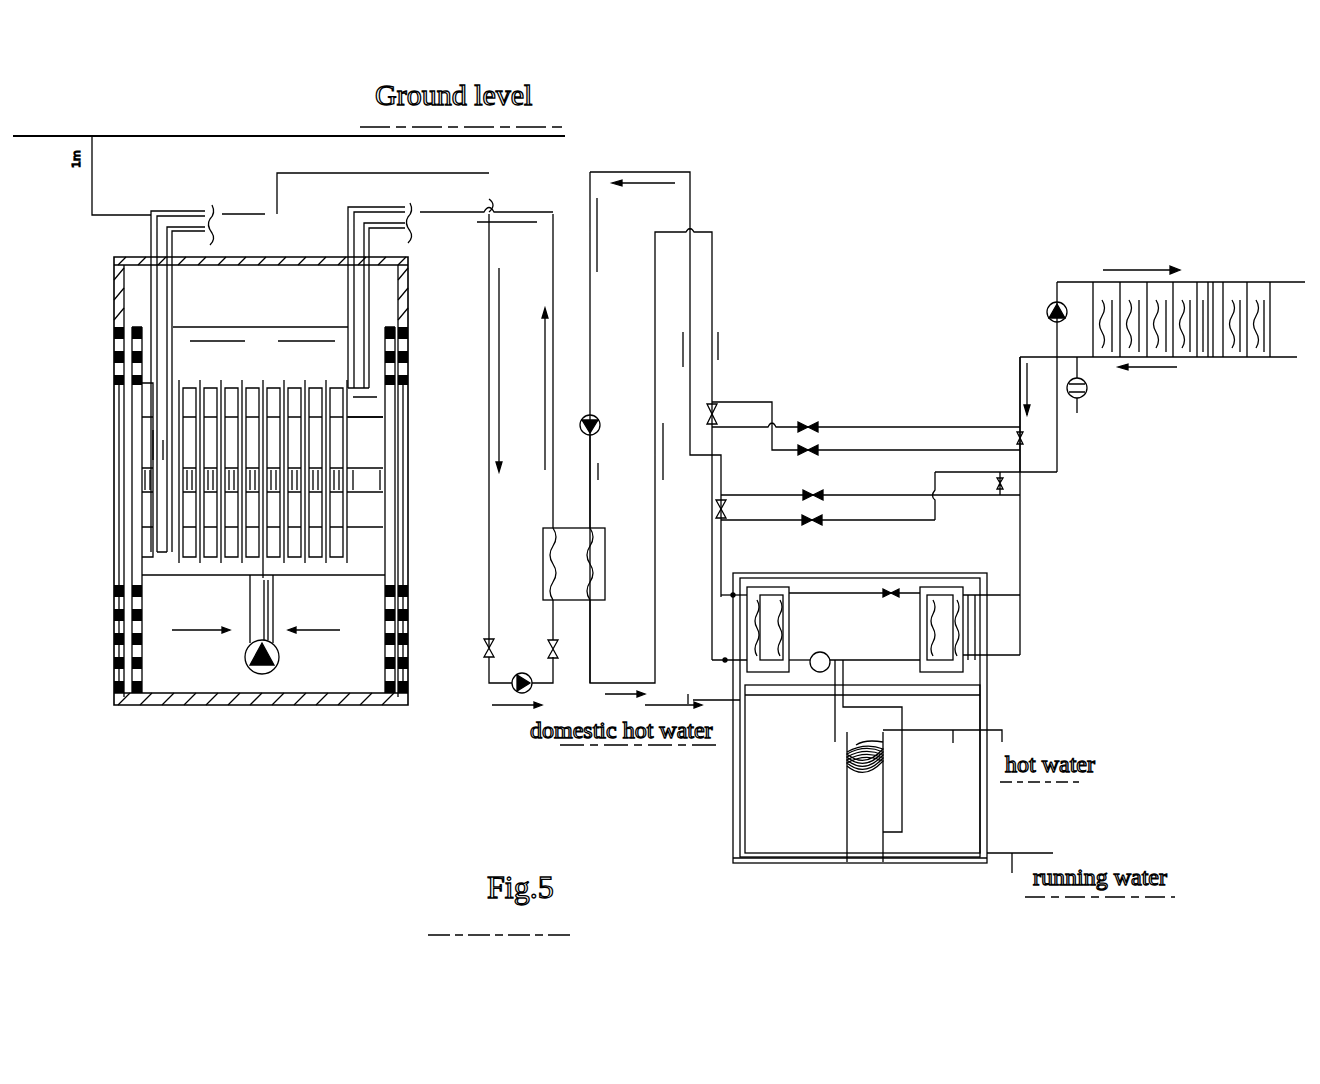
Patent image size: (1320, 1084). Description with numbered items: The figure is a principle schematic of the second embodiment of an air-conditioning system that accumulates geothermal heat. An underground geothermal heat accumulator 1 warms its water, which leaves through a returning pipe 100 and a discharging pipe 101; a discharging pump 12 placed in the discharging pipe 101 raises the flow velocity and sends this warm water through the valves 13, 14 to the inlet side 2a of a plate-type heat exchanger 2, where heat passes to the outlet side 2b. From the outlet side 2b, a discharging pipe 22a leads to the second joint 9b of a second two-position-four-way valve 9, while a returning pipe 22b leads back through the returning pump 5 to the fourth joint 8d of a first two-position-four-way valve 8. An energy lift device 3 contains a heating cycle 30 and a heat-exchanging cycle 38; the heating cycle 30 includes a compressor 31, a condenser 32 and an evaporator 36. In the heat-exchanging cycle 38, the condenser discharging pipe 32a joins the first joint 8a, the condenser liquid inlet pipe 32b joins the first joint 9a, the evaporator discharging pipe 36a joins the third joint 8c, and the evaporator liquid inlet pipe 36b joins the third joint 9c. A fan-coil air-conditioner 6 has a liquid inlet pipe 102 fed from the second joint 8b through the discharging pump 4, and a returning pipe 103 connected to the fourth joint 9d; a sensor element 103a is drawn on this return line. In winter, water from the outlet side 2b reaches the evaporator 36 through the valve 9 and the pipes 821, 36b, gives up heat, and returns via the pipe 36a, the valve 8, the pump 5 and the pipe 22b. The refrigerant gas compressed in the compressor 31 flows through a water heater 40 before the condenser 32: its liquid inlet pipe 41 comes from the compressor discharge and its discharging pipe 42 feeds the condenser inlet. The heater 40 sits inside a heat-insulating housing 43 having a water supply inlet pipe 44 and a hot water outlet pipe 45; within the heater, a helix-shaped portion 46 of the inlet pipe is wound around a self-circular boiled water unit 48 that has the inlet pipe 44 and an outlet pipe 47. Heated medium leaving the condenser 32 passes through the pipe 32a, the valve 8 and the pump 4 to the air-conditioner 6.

The geothermal heat accumulator 1 is at (308, 228).
The pipe 100 is at (366, 210).
The discharging pipe 101 is at (168, 212).
The heat exchanger 2 is at (542, 564).
The inlet side 2a is at (548, 556).
The outlet side 2b is at (600, 552).
The energy lift device 3 is at (975, 675).
The discharging pump 4 is at (1047, 310).
The returning pump 5 is at (598, 420).
The air-conditioner 6 is at (1190, 282).
The first two-position-four-way valve 8 is at (870, 498).
The first joint 8a is at (997, 492).
The second joint 8b is at (992, 472).
The third joint 8c is at (722, 527).
The fourth joint 8d is at (722, 495).
The pipe 821 is at (717, 509).
The second two-position-four-way valve 9 is at (866, 428).
The first joint 9a is at (1021, 452).
The second joint 9b is at (713, 402).
The third joint 9c is at (713, 427).
The fourth joint 9d is at (1015, 427).
The discharging pump 12 is at (512, 689).
The valve 13 is at (485, 657).
The valve 14 is at (550, 641).
The discharging pipe 22a is at (596, 649).
The returning pipe 22b is at (598, 444).
The heating cycle 30 is at (833, 595).
The compressor 31 is at (814, 652).
The condenser 32 is at (940, 587).
The discharging pipe 32a is at (1023, 597).
The liquid inlet pipe 32b is at (1023, 657).
The evaporator 36 is at (767, 587).
The discharging pipe 36a is at (718, 598).
The liquid inlet pipe 36b is at (710, 661).
The heat-exchanging cycle 38 is at (1034, 530).
The water heater 40 is at (765, 835).
The liquid inlet pipe 41 is at (830, 705).
The discharging pipe 42 is at (904, 714).
The heat-insulating housing 43 is at (748, 858).
The water supply inlet pipe 44 is at (1020, 873).
The hot water outlet pipe 45 is at (692, 696).
The helix inlet pipe 46 is at (838, 807).
The outlet pipe 47 is at (942, 746).
The self-circular boiled water unit 48 is at (840, 757).
The liquid inlet pipe 102 is at (1072, 282).
The returning pipe 103 is at (1019, 370).
The sensor 103a is at (1075, 394).